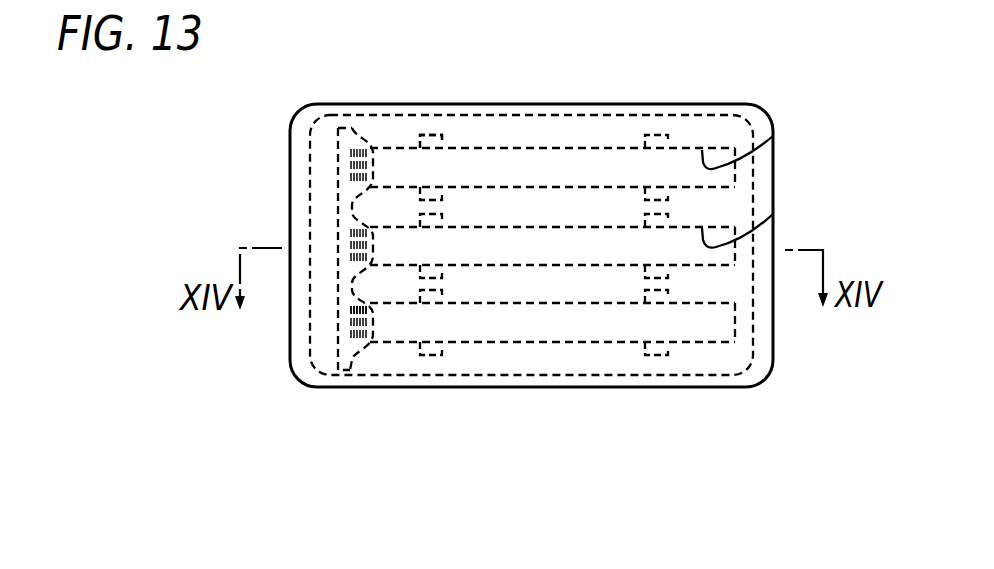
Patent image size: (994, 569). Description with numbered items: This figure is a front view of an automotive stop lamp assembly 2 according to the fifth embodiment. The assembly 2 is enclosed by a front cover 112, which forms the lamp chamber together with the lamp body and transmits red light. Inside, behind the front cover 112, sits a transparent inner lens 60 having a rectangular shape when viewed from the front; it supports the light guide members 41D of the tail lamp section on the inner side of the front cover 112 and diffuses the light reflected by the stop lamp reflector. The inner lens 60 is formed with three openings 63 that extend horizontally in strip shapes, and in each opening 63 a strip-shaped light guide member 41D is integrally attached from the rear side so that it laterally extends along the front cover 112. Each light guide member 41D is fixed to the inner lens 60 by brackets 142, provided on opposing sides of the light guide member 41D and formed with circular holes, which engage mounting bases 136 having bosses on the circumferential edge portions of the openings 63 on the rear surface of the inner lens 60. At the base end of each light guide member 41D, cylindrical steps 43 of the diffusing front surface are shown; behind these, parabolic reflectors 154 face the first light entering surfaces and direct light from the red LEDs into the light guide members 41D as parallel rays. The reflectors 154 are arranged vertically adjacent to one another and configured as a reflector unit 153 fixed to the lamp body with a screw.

The stop lamp assembly 2 is at (772, 100).
The inner lens 60 is at (716, 98).
The openings 63 is at (773, 136).
The light guide members 41D is at (492, 162).
The mounting bases 136 is at (424, 197).
The brackets 142 is at (431, 141).
The projection 43 is at (352, 166).
The reflectors 154 is at (372, 368).
The reflector unit 153 is at (358, 310).
The front cover 112 is at (743, 297).